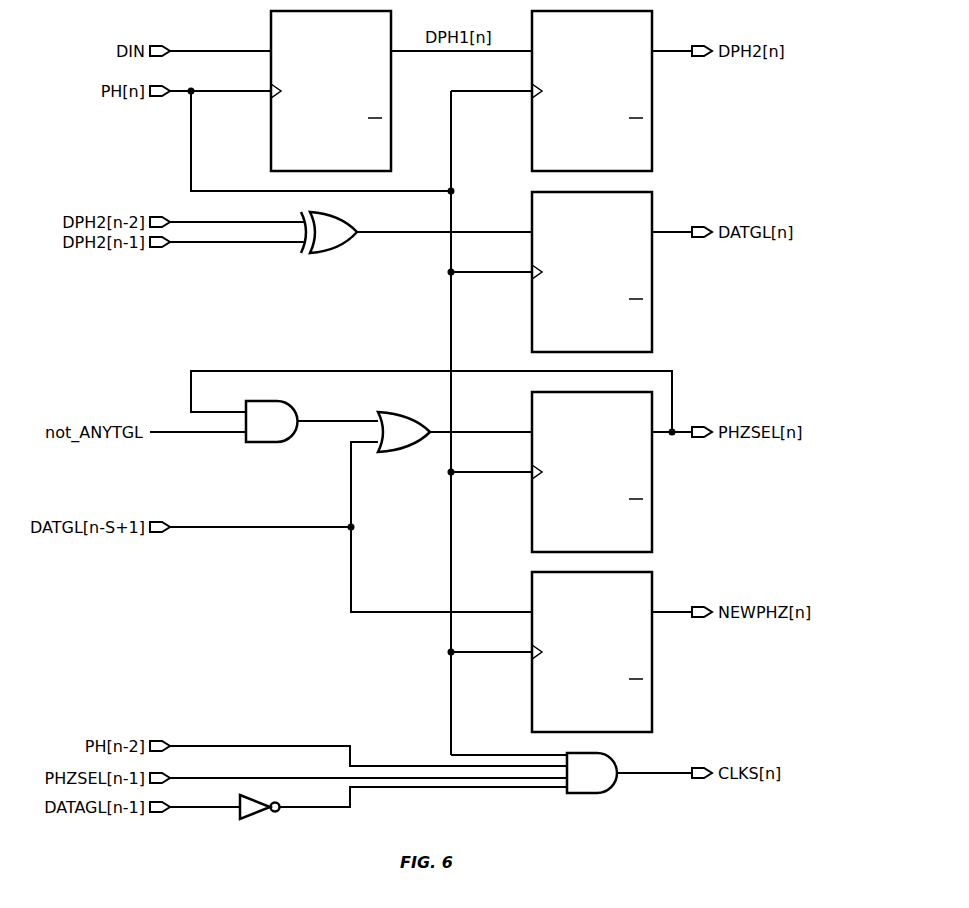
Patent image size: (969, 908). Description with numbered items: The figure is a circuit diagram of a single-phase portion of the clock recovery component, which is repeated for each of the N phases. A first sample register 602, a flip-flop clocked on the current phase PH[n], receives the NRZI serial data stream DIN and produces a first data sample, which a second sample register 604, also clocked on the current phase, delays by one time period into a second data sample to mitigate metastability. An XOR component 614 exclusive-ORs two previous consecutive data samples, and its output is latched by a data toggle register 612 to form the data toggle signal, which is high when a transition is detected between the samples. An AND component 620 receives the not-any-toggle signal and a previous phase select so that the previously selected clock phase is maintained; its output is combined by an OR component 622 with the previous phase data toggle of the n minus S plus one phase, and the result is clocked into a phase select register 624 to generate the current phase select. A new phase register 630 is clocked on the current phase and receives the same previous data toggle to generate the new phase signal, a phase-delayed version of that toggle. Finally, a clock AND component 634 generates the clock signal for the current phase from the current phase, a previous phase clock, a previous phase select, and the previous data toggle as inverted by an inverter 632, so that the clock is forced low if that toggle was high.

The first sample register 602 is at (271, 128).
The second sample register 604 is at (532, 128).
The data toggle register 612 is at (532, 309).
The XOR component 614 is at (320, 255).
The AND component 620 is at (262, 443).
The OR component 622 is at (393, 453).
The phase select register 624 is at (532, 509).
The new phase register 630 is at (532, 689).
The inverter 632 is at (258, 812).
The clock AND component 634 is at (588, 795).